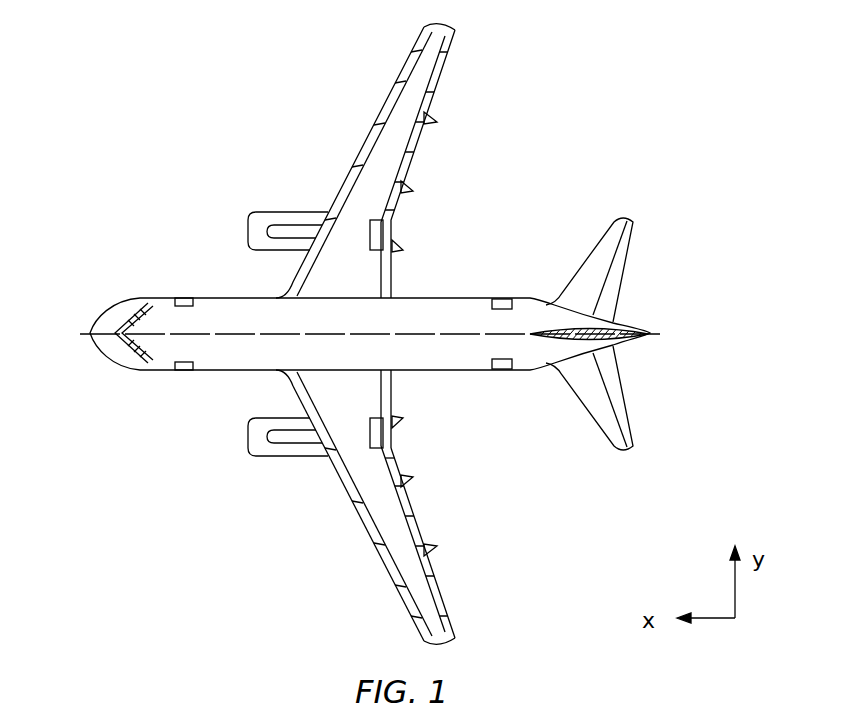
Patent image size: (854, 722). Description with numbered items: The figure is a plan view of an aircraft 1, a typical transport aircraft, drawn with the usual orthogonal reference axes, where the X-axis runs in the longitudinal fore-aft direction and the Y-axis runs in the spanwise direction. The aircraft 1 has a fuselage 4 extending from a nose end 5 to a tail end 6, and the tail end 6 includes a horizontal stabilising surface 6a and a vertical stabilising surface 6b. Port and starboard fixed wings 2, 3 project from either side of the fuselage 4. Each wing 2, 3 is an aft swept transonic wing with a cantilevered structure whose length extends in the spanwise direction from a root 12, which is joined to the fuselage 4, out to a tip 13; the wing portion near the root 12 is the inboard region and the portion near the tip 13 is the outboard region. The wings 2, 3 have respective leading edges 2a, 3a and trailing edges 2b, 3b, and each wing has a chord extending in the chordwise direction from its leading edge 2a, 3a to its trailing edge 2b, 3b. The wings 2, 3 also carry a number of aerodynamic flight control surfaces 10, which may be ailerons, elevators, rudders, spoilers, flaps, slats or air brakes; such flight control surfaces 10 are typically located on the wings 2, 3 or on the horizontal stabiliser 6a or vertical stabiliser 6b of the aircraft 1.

The aircraft 1 is at (171, 447).
The port fixed wing 2 is at (323, 267).
The leading edge of port wing 2a is at (368, 138).
The trailing edge of port wing 2b is at (408, 170).
The starboard fixed wing 3 is at (420, 595).
The leading edge of starboard wing 3a is at (360, 513).
The trailing edge of starboard wing 3b is at (418, 532).
The fuselage 4 is at (453, 308).
The nose end 5 is at (74, 304).
The tail end 6 is at (541, 401).
The horizontal stabilising surface 6a is at (610, 238).
The vertical stabilising surface 6b is at (603, 332).
The aerodynamic flight control surface 10 is at (392, 460).
The root 12 is at (300, 378).
The tip 13 is at (452, 635).